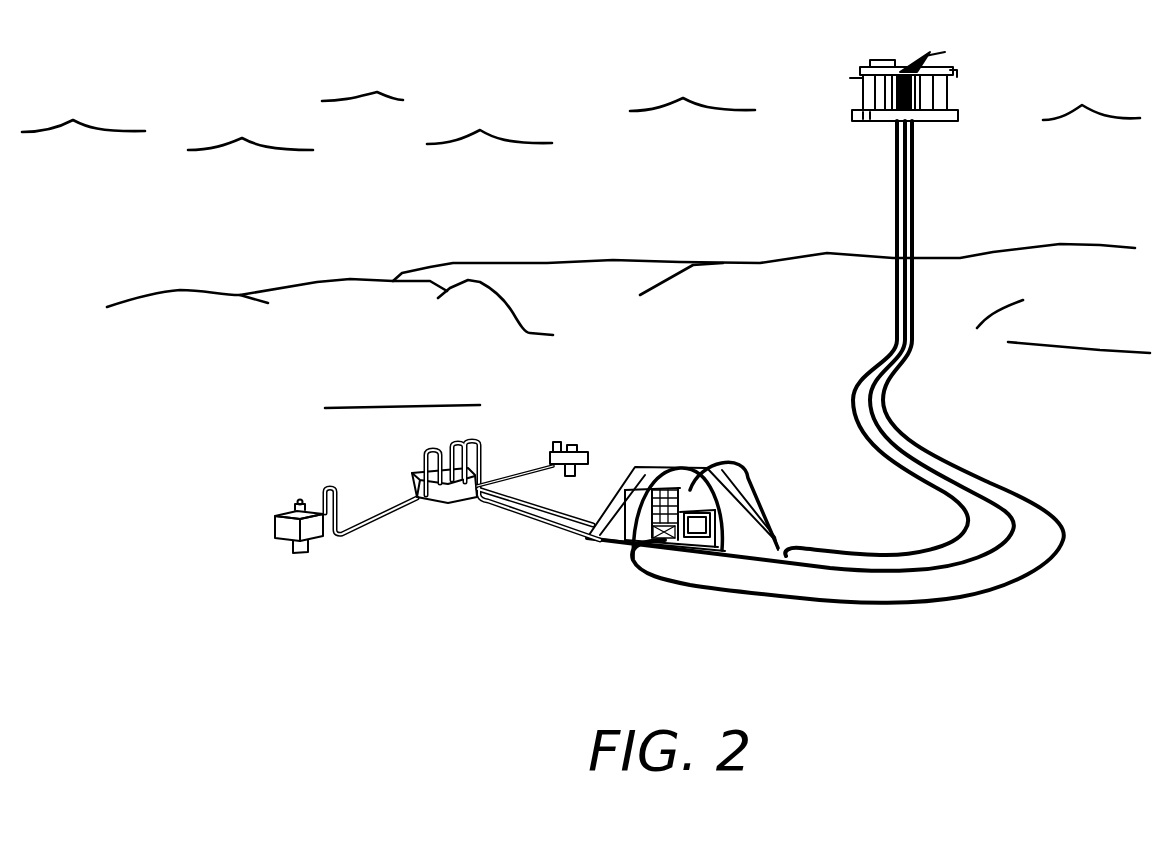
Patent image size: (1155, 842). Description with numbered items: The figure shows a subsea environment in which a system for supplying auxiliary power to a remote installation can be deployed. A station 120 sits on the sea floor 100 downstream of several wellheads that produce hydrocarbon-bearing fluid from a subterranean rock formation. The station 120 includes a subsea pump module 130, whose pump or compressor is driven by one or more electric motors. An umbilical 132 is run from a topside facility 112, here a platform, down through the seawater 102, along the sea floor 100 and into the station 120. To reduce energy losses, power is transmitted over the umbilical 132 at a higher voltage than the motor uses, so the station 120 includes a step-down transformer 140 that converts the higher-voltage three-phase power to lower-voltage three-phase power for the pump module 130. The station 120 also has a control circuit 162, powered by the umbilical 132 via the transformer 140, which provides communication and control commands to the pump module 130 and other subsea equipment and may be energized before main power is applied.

The sea floor 100 is at (1035, 433).
The seawater 102 is at (753, 216).
The topside facility 112 is at (940, 93).
The station 120 is at (638, 414).
The subsea pump module 130 is at (703, 527).
The umbilical 132 is at (870, 603).
The step-down transformer 140 is at (665, 527).
The control circuit 162 is at (685, 472).